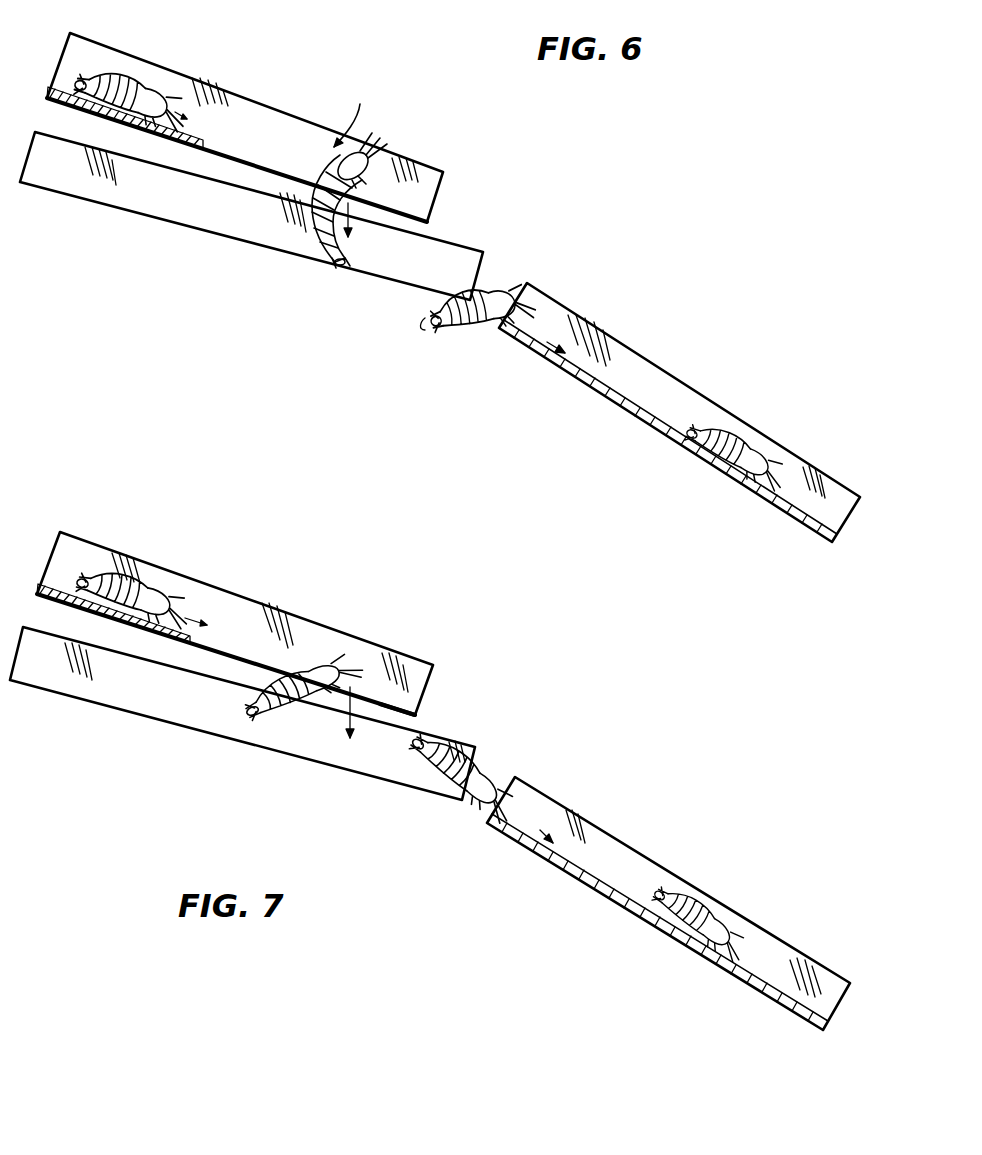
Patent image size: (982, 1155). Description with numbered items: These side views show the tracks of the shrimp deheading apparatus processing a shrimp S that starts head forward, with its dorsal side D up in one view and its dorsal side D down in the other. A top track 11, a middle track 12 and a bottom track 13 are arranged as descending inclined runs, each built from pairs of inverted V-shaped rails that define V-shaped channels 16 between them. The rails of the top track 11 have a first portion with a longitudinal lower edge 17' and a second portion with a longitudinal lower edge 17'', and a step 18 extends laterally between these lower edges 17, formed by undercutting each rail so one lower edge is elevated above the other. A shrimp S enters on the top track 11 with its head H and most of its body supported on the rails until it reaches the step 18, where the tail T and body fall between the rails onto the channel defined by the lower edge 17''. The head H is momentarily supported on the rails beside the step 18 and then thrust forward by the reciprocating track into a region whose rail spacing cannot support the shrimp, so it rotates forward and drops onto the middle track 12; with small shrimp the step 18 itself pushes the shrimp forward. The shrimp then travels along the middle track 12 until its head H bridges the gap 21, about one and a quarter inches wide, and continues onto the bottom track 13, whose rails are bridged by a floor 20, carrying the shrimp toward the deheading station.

In FIG. 6, the top track 11 is at (297, 118).
In FIG. 7, the top track 11 is at (223, 589).
In FIG. 6, the middle track 12 is at (267, 252).
In FIG. 7, the middle track 12 is at (212, 735).
In FIG. 6, the bottom track 13 is at (642, 358).
In FIG. 7, the bottom track 13 is at (575, 795).
In FIG. 6, the V-shaped channel 16 is at (355, 115).
In FIG. 6, the longitudinal lower edge 17 is at (261, 159).
In FIG. 7, the longitudinal lower edge of first portion 17' is at (226, 649).
In FIG. 7, the longitudinal lower edge of second portion 17'' is at (442, 699).
In FIG. 6, the step 18 is at (325, 172).
In FIG. 7, the step 18 is at (325, 672).
In FIG. 6, the floor 20 is at (602, 398).
In FIG. 7, the floor 20 is at (570, 852).
In FIG. 6, the gap 21 is at (502, 275).
In FIG. 7, the gap 21 is at (497, 767).
In FIG. 6, the tail T is at (88, 80).
In FIG. 7, the tail T is at (82, 577).
In FIG. 6, the shrimp S is at (137, 90).
In FIG. 7, the shrimp S is at (118, 593).
In FIG. 6, the dorsal side D is at (140, 102).
In FIG. 7, the dorsal side D is at (163, 633).
In FIG. 6, the head H is at (163, 108).
In FIG. 7, the head H is at (177, 610).